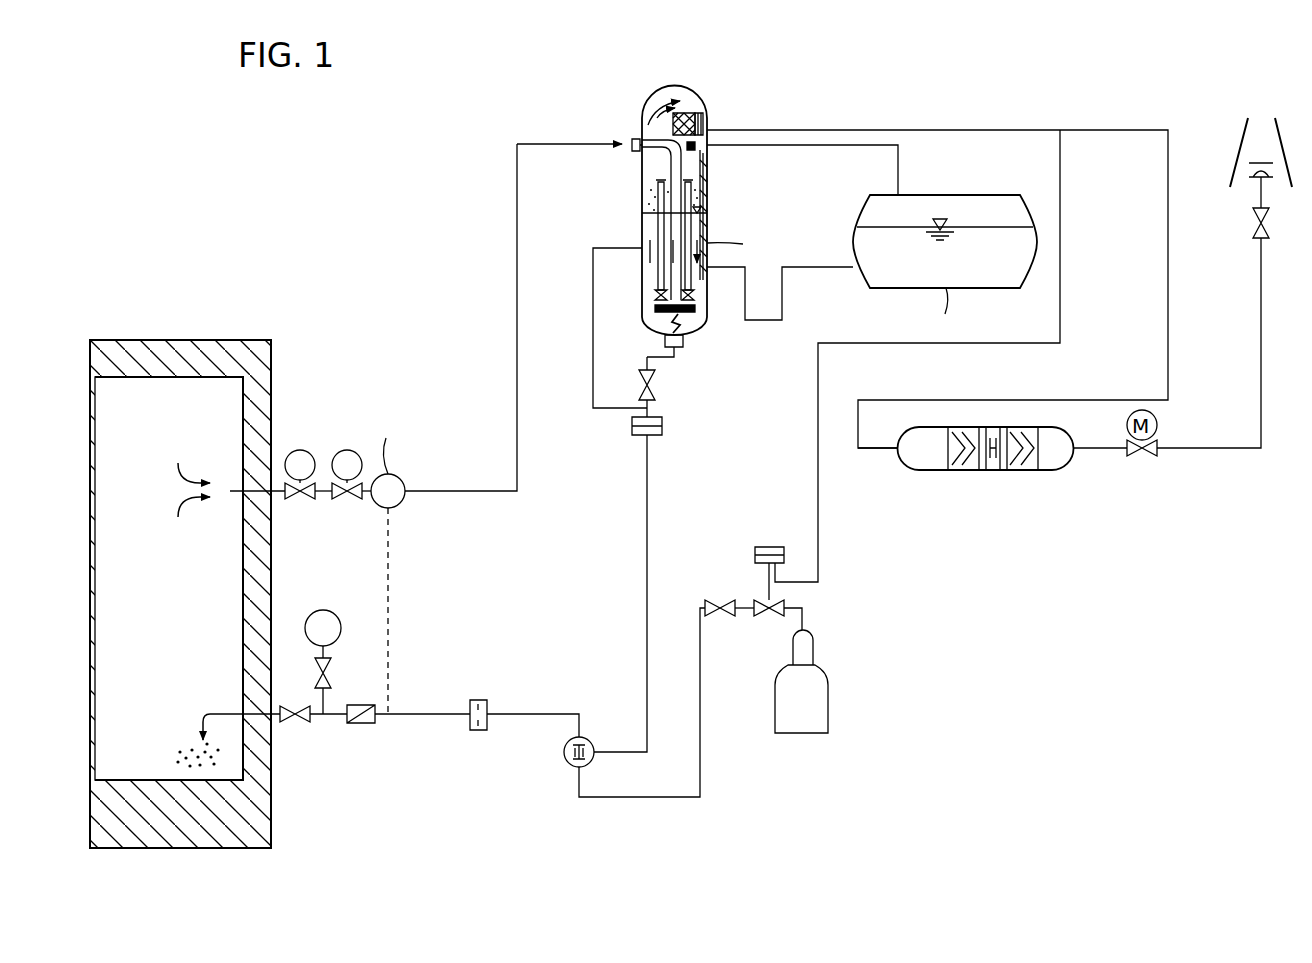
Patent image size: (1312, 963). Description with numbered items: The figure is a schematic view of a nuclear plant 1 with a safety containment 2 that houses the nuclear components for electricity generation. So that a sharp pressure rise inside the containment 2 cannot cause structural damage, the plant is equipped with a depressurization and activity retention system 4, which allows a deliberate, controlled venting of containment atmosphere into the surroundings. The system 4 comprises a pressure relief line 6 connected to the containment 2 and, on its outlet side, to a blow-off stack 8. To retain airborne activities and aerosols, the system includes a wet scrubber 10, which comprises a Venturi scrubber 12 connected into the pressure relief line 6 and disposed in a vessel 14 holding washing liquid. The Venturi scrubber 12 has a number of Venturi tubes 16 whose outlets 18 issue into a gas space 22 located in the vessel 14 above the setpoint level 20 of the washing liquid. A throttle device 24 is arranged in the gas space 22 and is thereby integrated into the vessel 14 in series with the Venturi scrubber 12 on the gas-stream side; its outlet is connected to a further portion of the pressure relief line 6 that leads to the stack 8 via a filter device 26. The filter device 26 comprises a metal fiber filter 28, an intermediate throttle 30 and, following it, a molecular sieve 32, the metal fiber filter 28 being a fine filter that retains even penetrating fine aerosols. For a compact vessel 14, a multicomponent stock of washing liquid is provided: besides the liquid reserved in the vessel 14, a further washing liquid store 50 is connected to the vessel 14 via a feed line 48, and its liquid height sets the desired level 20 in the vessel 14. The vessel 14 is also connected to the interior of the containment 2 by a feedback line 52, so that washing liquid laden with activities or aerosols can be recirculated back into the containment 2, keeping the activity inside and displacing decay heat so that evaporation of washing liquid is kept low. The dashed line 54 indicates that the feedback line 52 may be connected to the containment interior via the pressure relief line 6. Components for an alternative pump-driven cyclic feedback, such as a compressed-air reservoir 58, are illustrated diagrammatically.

The nuclear plant 1 is at (300, 184).
The safety containment 2 is at (181, 340).
The depressurization and activity retention system 4 is at (549, 144).
The pressure relief line 6 is at (517, 318).
The blow-off stack 8 is at (1240, 150).
The wet scrubber 10 is at (707, 116).
The Venturi scrubber 12 is at (671, 228).
The vessel 14 is at (707, 213).
The Venturi tubes 16 is at (656, 188).
The outlets 18 is at (700, 183).
The setpoint level 20 is at (660, 207).
The gas space 22 is at (660, 100).
The throttle device 24 is at (673, 128).
The filter device 26 is at (992, 482).
The metal fiber filter 28 is at (960, 470).
The intermediate throttle 30 is at (995, 470).
The molecular sieve 32 is at (1063, 470).
The feed line 48 is at (818, 267).
The further washing liquid store 50 is at (957, 195).
The feedback line 52 is at (647, 492).
The dashed line 54 is at (388, 603).
The compressed-air reservoir 58 is at (828, 697).